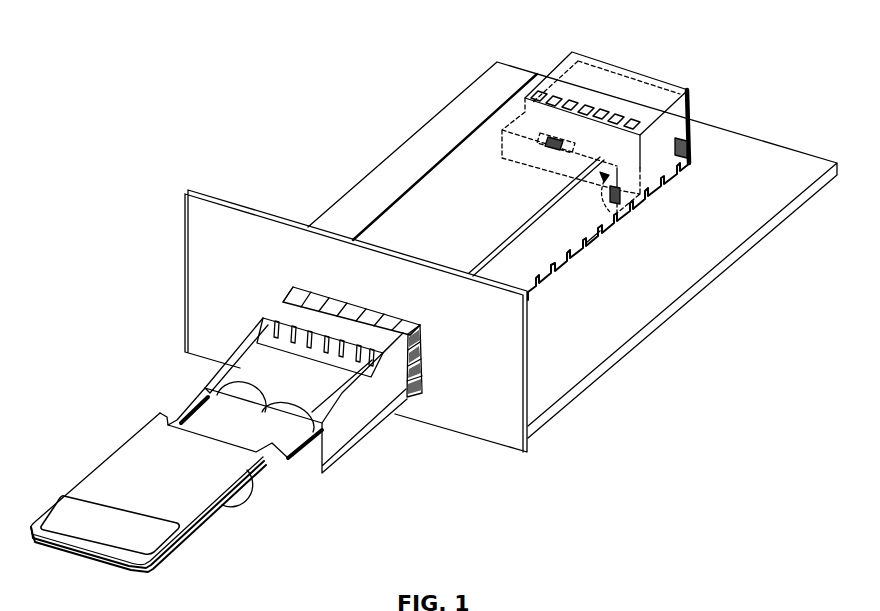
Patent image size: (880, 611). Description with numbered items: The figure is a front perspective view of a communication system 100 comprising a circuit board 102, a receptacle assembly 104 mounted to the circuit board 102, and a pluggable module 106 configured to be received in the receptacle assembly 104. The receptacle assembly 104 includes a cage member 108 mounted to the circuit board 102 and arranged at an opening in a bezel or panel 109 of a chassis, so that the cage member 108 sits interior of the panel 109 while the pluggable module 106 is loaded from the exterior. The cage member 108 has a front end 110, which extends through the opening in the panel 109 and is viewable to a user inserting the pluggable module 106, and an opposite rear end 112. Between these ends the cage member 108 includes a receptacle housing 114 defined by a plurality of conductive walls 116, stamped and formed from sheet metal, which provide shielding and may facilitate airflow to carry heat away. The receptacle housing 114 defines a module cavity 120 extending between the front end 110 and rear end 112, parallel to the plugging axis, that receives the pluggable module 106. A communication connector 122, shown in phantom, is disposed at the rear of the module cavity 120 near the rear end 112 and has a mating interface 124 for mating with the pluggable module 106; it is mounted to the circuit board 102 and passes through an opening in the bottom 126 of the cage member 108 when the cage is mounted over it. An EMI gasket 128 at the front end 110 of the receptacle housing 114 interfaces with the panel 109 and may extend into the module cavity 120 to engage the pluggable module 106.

The communication system 100 is at (323, 75).
The circuit board 102 is at (765, 153).
The receptacle assembly 104 is at (673, 150).
The pluggable module 106 is at (227, 429).
The cage member 108 is at (643, 94).
The panel 109 is at (483, 422).
The front end 110 is at (395, 412).
The rear end 112 is at (742, 168).
The receptacle housing 114 is at (575, 235).
The walls 116 is at (470, 165).
The module cavity 120 is at (396, 386).
The communication connector 122 is at (655, 168).
The mating interface 124 is at (612, 218).
The bottom 126 is at (592, 236).
The EMI gasket 128 is at (300, 288).